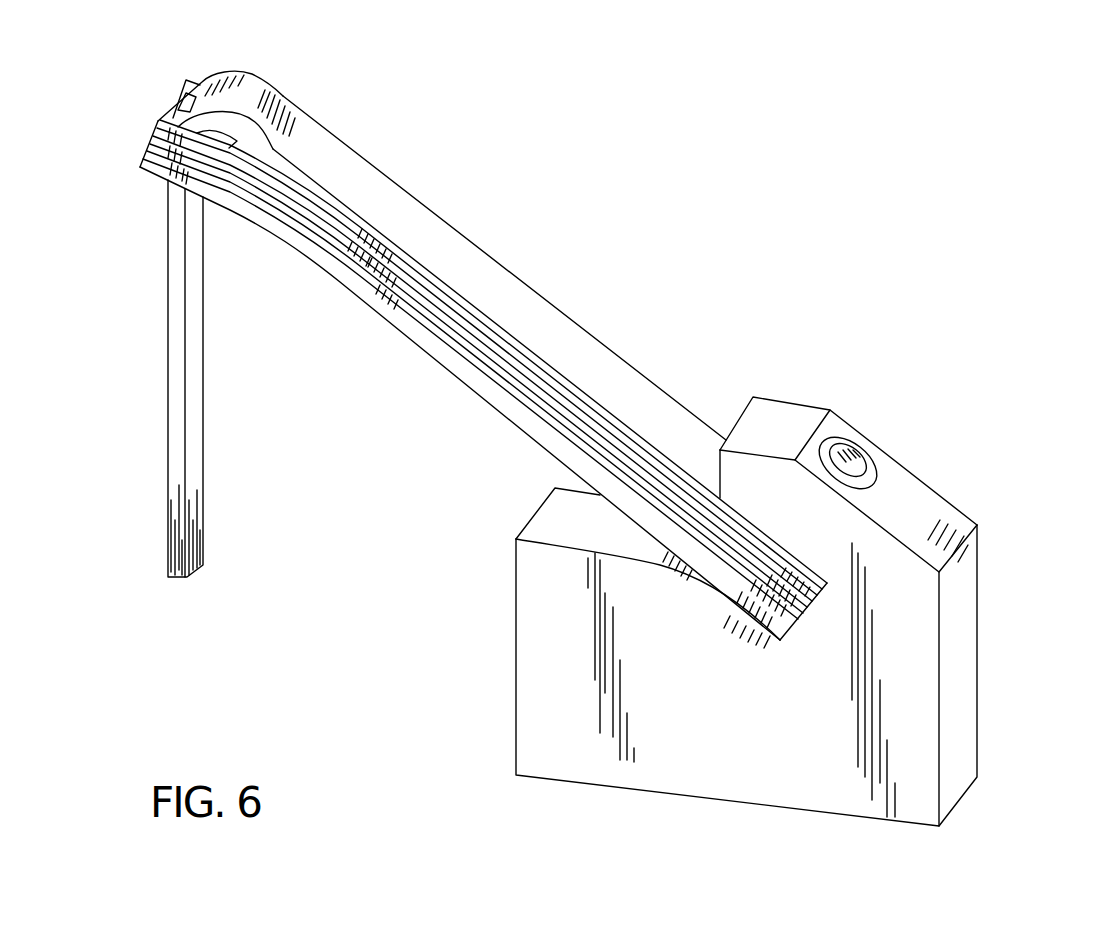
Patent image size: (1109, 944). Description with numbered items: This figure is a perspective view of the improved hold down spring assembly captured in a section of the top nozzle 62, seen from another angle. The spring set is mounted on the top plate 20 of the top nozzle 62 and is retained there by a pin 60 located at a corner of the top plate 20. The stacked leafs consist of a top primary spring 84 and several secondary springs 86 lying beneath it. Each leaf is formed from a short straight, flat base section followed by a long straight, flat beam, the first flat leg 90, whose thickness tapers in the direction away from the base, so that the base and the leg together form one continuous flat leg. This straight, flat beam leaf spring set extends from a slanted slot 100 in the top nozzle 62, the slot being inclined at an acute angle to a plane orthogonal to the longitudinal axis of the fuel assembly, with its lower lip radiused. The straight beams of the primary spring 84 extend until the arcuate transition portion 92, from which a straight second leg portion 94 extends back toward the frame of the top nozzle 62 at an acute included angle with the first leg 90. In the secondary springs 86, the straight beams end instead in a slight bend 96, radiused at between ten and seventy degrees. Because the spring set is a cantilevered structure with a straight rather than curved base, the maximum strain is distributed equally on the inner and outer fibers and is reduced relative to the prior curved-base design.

The top plate 20 is at (515, 663).
The pin 60 is at (852, 463).
The top nozzle 62 is at (995, 632).
The primary spring 84 is at (407, 194).
The secondary spring 86 is at (486, 348).
The first flat leg 90 is at (605, 343).
The arcuate transition portion 92 is at (278, 86).
The second leg portion 94 is at (205, 447).
The bend 96 is at (237, 216).
The slanted slot 100 is at (797, 618).